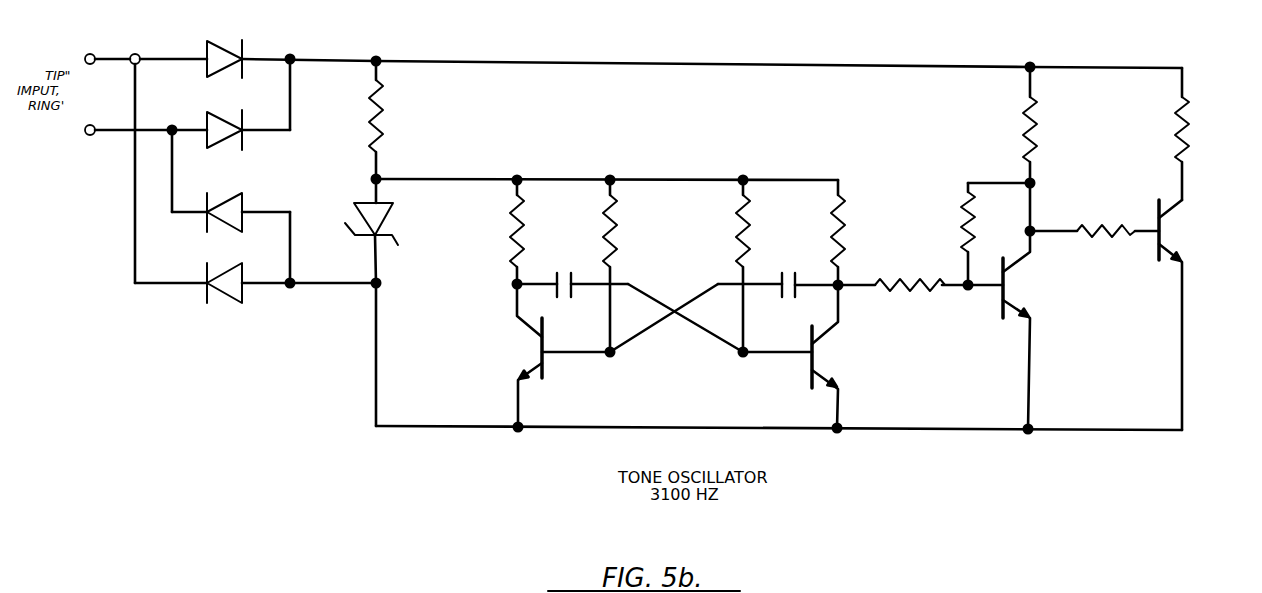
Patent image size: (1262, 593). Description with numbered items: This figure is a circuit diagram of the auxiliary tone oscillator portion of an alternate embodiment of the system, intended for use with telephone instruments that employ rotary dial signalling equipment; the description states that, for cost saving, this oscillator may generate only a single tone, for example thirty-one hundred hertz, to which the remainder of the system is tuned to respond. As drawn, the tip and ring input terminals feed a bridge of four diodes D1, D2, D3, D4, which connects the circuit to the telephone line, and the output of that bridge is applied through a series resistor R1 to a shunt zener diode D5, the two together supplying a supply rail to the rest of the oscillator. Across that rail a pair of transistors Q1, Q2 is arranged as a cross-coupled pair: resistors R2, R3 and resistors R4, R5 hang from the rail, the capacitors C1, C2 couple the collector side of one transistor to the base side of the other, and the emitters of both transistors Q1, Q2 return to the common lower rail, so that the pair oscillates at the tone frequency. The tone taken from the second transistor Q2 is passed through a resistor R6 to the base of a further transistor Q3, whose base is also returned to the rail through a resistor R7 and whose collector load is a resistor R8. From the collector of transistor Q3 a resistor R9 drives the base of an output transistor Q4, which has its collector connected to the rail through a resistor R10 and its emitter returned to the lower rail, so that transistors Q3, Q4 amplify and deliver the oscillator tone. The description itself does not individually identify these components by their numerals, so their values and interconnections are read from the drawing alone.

The diode 1N270 D1 is at (188, 47).
The diode 1N270 D2 is at (206, 142).
The diode 1N270 D3 is at (202, 215).
The diode 1N270 D4 is at (206, 297).
The zener diode 1N749A D5 is at (401, 231).
The resistor 820 ohm R1 is at (393, 120).
The resistor 4.7K R2 is at (507, 232).
The resistor 4.7K R3 is at (629, 266).
The resistor 4.7K R4 is at (758, 266).
The resistor 4.7K R5 is at (859, 232).
The resistor 2.7K R6 is at (910, 291).
The resistor 100K R7 is at (973, 234).
The resistor 4.7K R8 is at (1039, 149).
The resistor 2.7K R9 is at (1106, 228).
The resistor 560 ohm R10 is at (1200, 134).
The capacitor C1 is at (565, 295).
The capacitor C2 is at (785, 296).
The transistor 2N5449 Q1 is at (544, 355).
The transistor 2N5449 Q2 is at (857, 356).
The transistor 2N5449 Q3 is at (1047, 330).
The transistor 2N5449 Q4 is at (1206, 315).